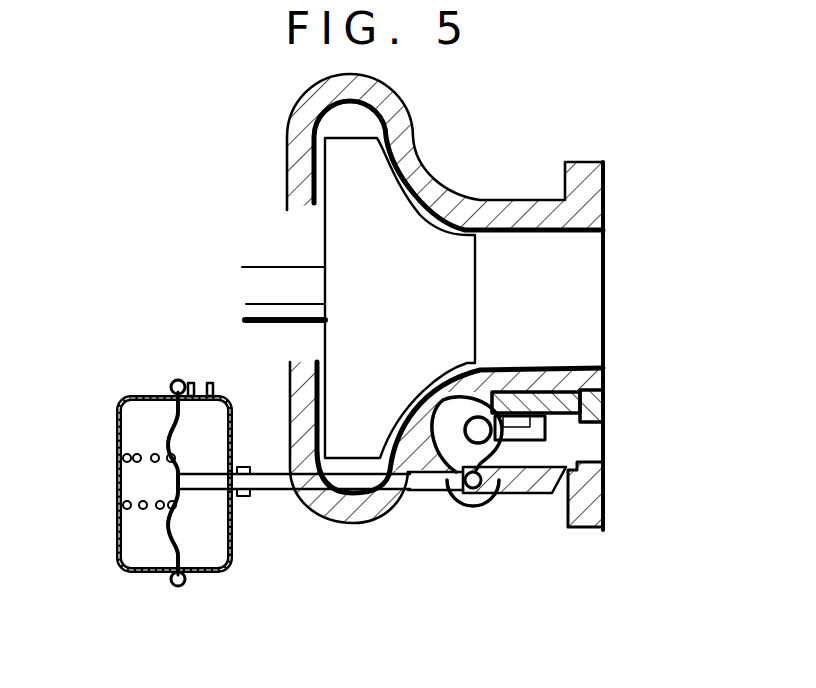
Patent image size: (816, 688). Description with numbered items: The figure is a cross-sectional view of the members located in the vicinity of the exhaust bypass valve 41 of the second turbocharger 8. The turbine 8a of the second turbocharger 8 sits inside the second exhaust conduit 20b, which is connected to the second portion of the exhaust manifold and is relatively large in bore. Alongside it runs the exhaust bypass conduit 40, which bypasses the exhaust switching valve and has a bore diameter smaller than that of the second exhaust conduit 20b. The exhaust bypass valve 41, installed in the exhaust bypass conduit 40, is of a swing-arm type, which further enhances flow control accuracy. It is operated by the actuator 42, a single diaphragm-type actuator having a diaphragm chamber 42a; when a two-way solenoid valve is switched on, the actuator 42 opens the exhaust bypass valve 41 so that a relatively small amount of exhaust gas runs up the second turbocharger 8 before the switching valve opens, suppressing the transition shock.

The second turbocharger 8 is at (270, 280).
The turbine 8a is at (357, 240).
The second exhaust conduit 20b is at (565, 317).
The exhaust bypass valve 41 is at (585, 403).
The exhaust bypass conduit 40 is at (577, 445).
The actuator 42 is at (115, 440).
The diaphragm chamber 42a is at (217, 423).